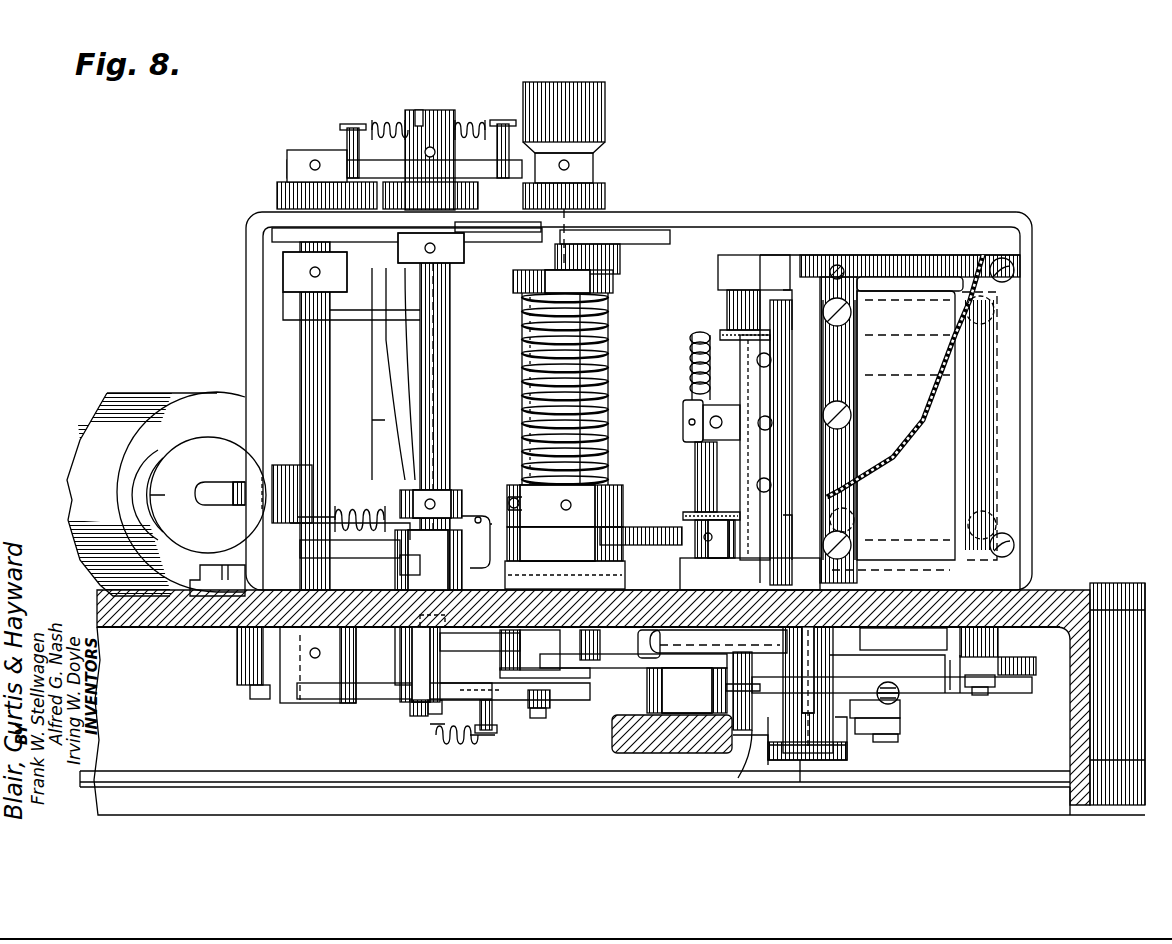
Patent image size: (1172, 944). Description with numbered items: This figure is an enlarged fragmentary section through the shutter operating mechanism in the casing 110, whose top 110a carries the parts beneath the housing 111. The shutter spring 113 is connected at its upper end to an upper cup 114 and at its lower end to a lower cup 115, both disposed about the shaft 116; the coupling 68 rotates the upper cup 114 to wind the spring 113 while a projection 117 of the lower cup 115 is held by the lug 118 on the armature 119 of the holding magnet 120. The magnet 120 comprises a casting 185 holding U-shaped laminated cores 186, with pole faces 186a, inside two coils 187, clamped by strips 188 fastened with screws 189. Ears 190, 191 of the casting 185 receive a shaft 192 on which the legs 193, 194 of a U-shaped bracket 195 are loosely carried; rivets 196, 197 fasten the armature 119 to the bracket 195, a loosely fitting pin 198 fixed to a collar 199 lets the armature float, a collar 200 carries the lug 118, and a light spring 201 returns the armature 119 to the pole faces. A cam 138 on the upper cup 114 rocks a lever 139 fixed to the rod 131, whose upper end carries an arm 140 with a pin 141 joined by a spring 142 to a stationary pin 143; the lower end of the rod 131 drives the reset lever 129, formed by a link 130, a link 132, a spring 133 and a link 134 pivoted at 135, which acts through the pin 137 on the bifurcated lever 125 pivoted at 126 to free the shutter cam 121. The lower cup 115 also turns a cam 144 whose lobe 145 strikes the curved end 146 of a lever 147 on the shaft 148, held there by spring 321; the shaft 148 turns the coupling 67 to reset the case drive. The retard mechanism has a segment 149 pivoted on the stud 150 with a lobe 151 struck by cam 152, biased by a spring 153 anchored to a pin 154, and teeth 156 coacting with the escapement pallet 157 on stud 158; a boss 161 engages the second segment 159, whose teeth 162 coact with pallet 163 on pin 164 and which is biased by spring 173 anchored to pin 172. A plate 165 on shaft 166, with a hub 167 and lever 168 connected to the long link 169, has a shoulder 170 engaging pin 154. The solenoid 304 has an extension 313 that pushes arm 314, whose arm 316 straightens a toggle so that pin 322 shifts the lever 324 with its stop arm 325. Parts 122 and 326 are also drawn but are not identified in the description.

The coupling 67 is at (432, 112).
The coupling 68 is at (600, 103).
The casing 110 is at (1105, 630).
The casing top 110a is at (147, 620).
The housing 111 is at (668, 212).
The shutter spring 113 is at (522, 358).
The upper cup 114 is at (518, 282).
The lower cup 115 is at (512, 487).
The shaft 116 is at (520, 404).
The projection 117 is at (640, 524).
The lug 118 is at (600, 547).
The armature 119 is at (780, 398).
The holding magnet 120 is at (995, 243).
The shutter cam 121 is at (575, 675).
The stud 122 is at (540, 718).
The bifurcated lever 125 is at (388, 668).
The pivot 126 is at (250, 692).
The reset lever 129 is at (376, 713).
The link 130 is at (338, 700).
The rod 131 is at (310, 350).
The link 132 is at (503, 715).
The spring 133 is at (455, 742).
The link 134 is at (410, 712).
The pivot 135 is at (420, 716).
The pin 137 is at (456, 686).
The cam 138 is at (620, 248).
The lever 139 is at (483, 248).
The arm 140 is at (478, 166).
The pin 141 is at (503, 120).
The spring 142 is at (392, 120).
The stationary pin 143 is at (345, 140).
The cam 144 is at (598, 560).
The cam lobe 145 is at (495, 560).
The curved end 146 is at (538, 535).
The lever 147 is at (460, 484).
The shaft 148 is at (433, 373).
The segment 149 is at (730, 632).
The stud 150 is at (678, 752).
The lobe 151 is at (645, 632).
The cam 152 is at (524, 632).
The spring 153 is at (733, 690).
The pin 154 is at (742, 760).
The teeth 156 is at (832, 640).
The escapement pallet 157 is at (893, 628).
The stud 158 is at (877, 695).
The second segment 159 is at (912, 670).
The boss 161 is at (770, 680).
The teeth 162 is at (952, 680).
The escapement pallet 163 is at (1010, 663).
The pin 164 is at (985, 690).
The plate 165 is at (898, 724).
The shaft 166 is at (808, 768).
The hub 167 is at (840, 745).
The lever 168 is at (830, 762).
The long link 169 is at (170, 773).
The shoulder 170 is at (745, 735).
The pin 172 is at (882, 740).
The spring 173 is at (900, 708).
The casting 185 is at (866, 262).
The cores 186 is at (890, 384).
The pole faces 186a is at (782, 332).
The coils 187 is at (935, 320).
The clamping strips 188 is at (845, 350).
The screws 189 is at (848, 316).
The ear 190 is at (709, 268).
The ear 191 is at (750, 580).
The shaft 192 is at (700, 468).
The leg 193 is at (730, 342).
The leg 194 is at (690, 512).
The U-shaped bracket 195 is at (765, 440).
The rivet 196 is at (757, 358).
The rivet 197 is at (757, 485).
The pin 198 is at (730, 428).
The collar 199 is at (688, 413).
The collar 200 is at (718, 528).
The light spring 201 is at (688, 357).
The solenoid 304 is at (151, 377).
The extension 313 is at (236, 478).
The arm 314 is at (285, 485).
The arm 316 is at (305, 547).
The spring 321 is at (470, 512).
The pin 322 is at (458, 612).
The lever 324 is at (420, 628).
The stop arm 325 is at (622, 672).
The spring 326 is at (390, 512).